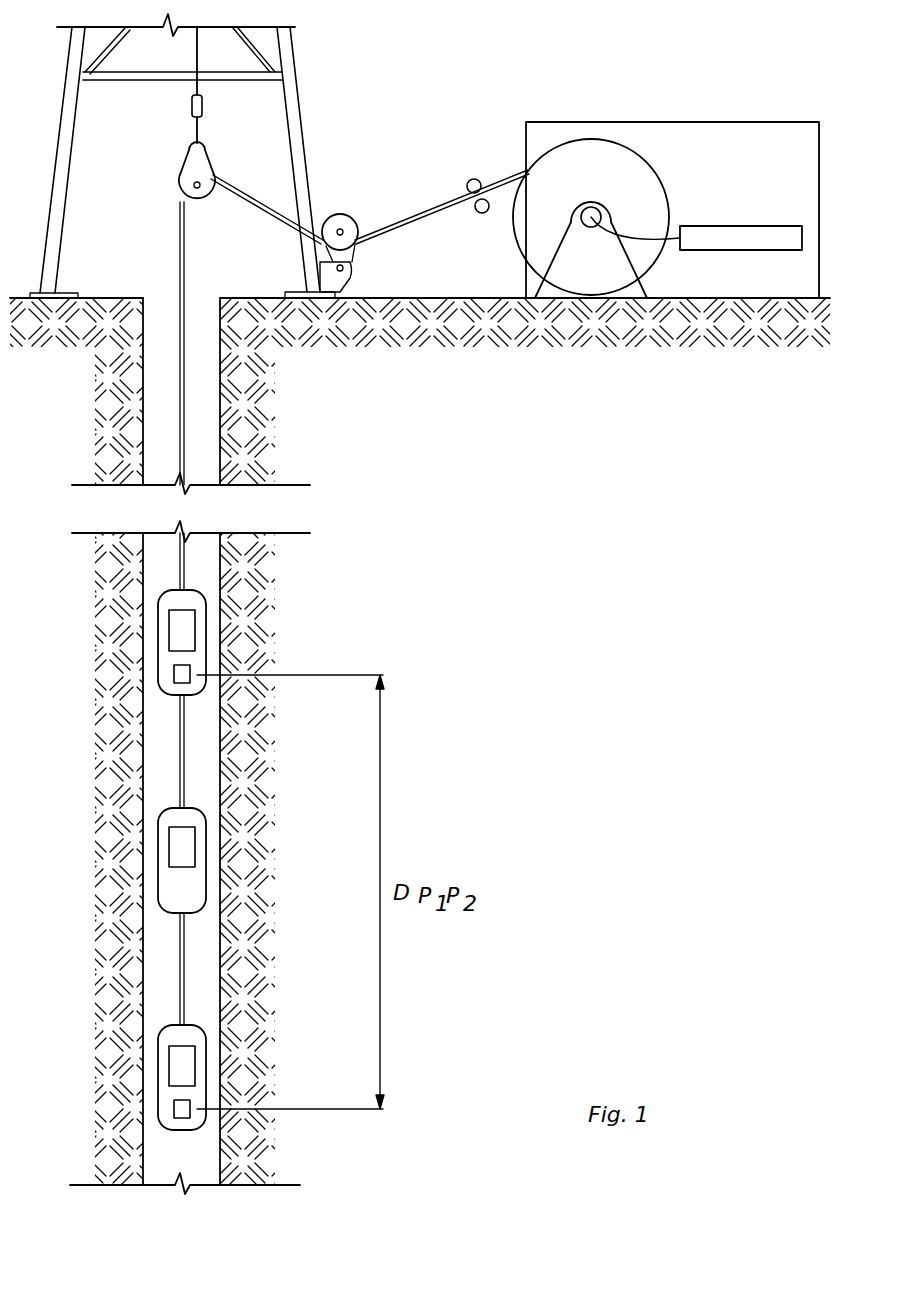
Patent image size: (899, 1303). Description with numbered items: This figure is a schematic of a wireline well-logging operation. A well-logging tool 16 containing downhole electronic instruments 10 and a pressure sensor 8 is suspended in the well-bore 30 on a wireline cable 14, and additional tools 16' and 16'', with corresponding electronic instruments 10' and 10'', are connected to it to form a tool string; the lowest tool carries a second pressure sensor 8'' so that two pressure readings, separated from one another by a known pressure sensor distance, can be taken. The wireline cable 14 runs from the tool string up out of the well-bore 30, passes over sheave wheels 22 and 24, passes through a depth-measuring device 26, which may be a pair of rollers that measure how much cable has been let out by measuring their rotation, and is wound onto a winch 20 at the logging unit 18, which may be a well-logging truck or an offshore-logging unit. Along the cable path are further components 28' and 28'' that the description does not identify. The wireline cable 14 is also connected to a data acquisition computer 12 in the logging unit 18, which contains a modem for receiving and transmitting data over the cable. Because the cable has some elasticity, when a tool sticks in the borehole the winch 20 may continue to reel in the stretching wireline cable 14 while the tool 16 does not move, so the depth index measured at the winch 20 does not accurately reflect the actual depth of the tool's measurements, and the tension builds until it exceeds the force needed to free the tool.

The pressure sensor 8 is at (115, 662).
The pressure sensor 8'' is at (113, 1096).
The downhole electronic instruments 10 is at (118, 642).
The downhole tool 10' is at (118, 860).
The downhole tool 10'' is at (116, 1077).
The data acquisition computer 12 is at (735, 226).
The wireline cable 14 is at (422, 208).
The well-logging tool 16 is at (112, 630).
The additional tool 16' is at (112, 857).
The additional tool 16'' is at (111, 1066).
The logging unit 18 is at (755, 122).
The winch 20 is at (655, 170).
The sheave wheel 22 is at (178, 181).
The sheave wheel 24 is at (340, 213).
The depth-measuring device 26 is at (473, 178).
The tension sensor 28' is at (165, 107).
The tension sensor 28'' is at (376, 267).
The wellbore 30 is at (160, 298).